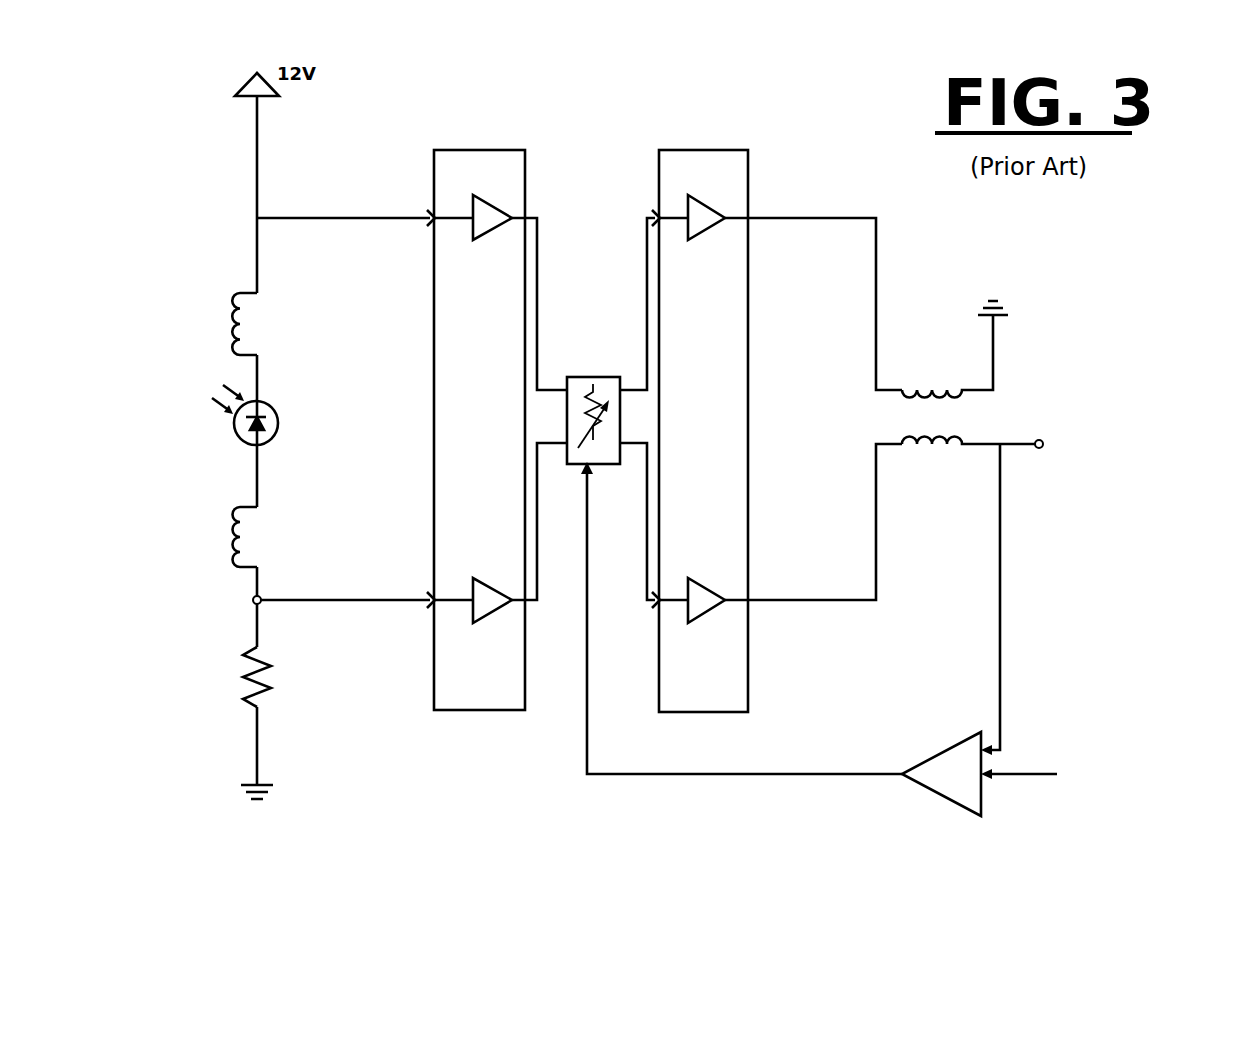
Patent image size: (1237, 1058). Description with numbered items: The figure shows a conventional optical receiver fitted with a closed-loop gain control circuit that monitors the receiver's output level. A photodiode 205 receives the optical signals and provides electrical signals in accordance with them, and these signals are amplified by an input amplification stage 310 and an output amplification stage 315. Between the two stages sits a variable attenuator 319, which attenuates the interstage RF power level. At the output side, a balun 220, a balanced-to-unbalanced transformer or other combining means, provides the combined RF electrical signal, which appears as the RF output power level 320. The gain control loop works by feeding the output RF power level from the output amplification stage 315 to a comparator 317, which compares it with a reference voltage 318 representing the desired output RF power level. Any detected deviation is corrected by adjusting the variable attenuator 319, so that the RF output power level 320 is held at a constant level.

The photodiode 205 is at (237, 441).
The input amplification stage 310 is at (492, 148).
The output amplification stage 315 is at (705, 150).
The variable attenuator 319 is at (573, 377).
The balun 220 is at (937, 446).
The RF output power level 320 is at (1044, 452).
The comparator 317 is at (932, 792).
The reference voltage 318 is at (1135, 763).